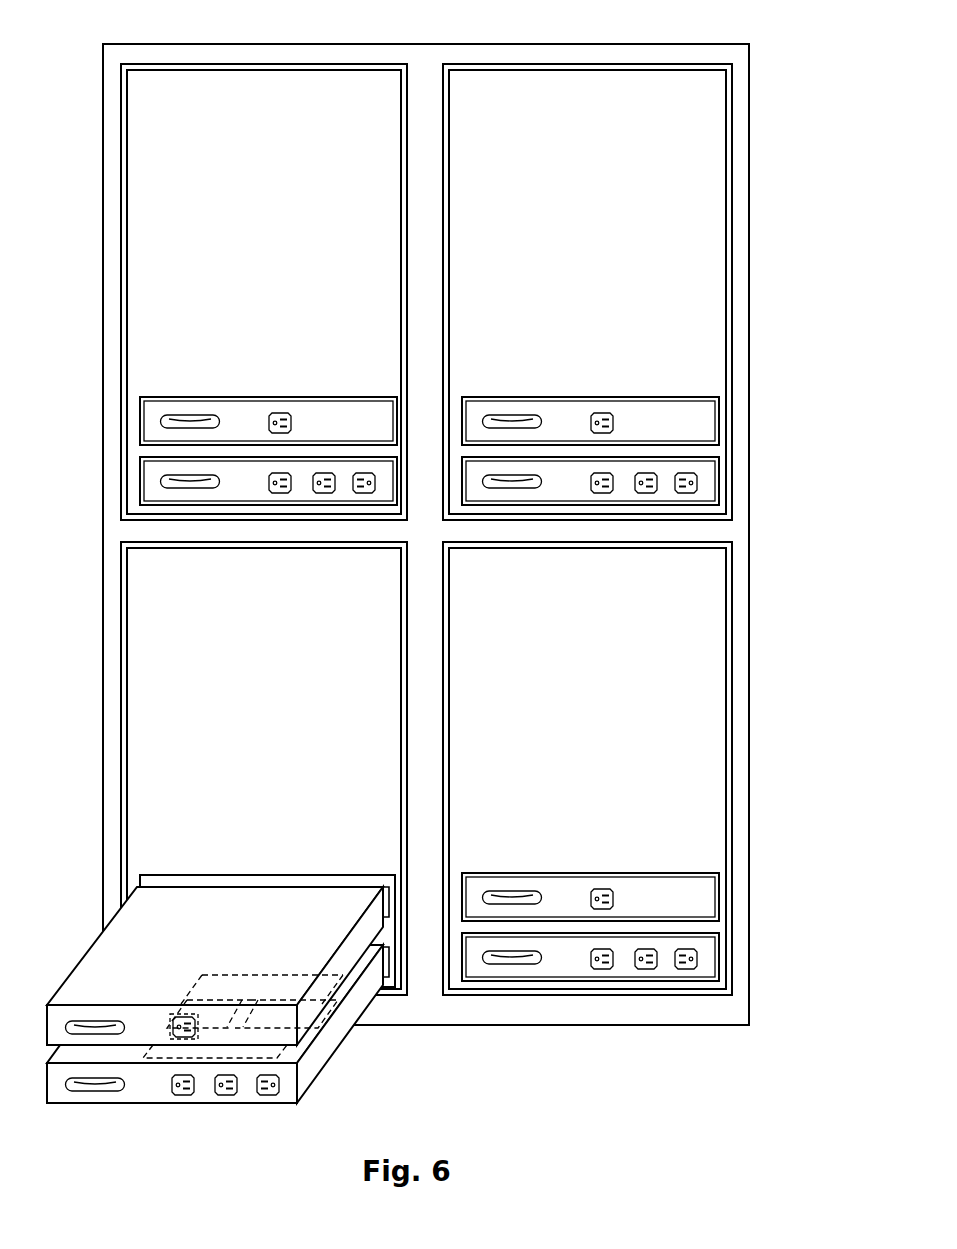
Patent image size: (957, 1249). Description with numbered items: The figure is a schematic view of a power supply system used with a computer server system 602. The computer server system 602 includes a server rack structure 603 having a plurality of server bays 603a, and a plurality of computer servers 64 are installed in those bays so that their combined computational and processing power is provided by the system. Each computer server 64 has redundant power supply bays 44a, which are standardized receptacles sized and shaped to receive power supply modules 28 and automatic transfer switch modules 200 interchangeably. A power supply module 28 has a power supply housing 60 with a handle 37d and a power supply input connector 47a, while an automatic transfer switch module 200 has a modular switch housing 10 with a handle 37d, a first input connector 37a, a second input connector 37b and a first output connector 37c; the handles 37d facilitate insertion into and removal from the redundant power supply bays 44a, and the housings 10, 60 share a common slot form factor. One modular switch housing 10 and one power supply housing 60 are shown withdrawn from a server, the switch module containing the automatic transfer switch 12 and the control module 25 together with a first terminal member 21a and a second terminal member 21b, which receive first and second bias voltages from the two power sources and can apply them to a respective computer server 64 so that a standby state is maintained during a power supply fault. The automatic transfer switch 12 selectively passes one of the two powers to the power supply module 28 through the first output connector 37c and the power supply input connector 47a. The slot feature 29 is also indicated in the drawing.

The computer server system 602 is at (139, 29).
The server rack structure 603 is at (739, 58).
The server bays 603a is at (440, 63).
The computer servers 64 is at (277, 201).
The power supply module 28 is at (343, 408).
The redundant power supply bays 44a is at (140, 477).
The automatic transfer switch module 200 is at (147, 492).
The first input connector 37a is at (602, 970).
The second input connector 37b is at (650, 970).
The first output connector 37c is at (692, 970).
The handle 37d is at (517, 953).
The power supply input connector 47a is at (604, 889).
The slot guide 29 is at (388, 975).
The power supply housing 60 is at (115, 955).
The modular switch housing 10 is at (118, 1052).
The control module 25 is at (258, 982).
The first terminal member 21a is at (205, 1012).
The second terminal member 21b is at (303, 1015).
The automatic transfer switch 12 is at (175, 1048).